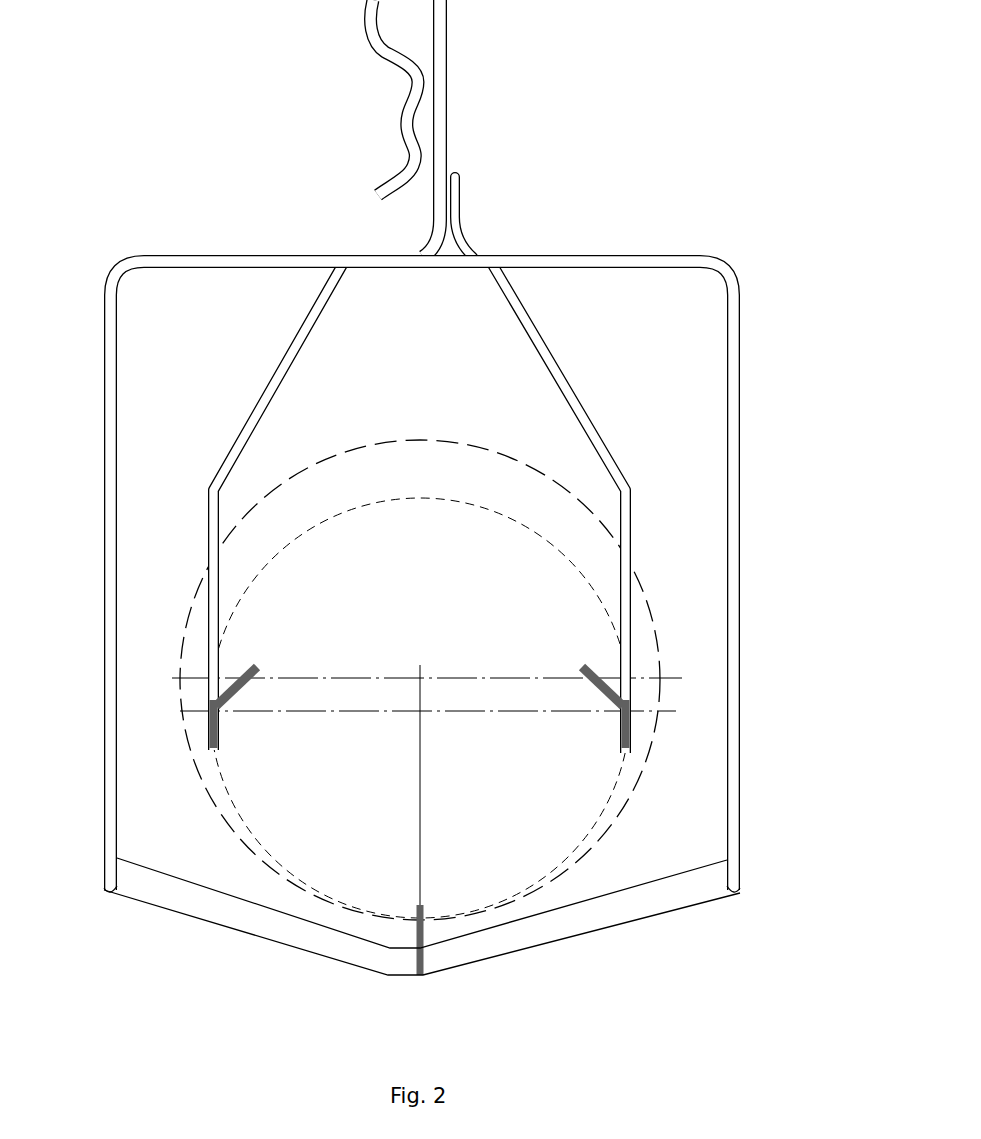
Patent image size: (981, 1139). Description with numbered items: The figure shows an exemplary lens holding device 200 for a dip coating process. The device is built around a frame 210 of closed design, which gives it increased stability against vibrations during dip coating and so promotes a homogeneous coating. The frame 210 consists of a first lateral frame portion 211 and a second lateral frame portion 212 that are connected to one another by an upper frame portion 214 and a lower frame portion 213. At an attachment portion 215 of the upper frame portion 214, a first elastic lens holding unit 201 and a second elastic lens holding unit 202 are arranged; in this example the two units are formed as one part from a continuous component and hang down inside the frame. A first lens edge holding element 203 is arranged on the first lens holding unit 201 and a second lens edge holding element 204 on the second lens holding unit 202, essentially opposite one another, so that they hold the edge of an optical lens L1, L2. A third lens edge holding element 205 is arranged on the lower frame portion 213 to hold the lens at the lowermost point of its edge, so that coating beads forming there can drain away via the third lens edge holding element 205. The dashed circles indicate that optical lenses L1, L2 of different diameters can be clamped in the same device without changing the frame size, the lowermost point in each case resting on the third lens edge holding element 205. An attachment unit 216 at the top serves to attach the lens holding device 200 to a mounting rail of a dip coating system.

The lens holding device 200 is at (694, 86).
The frame 210 is at (419, 567).
The first lateral frame portion 211 is at (104, 476).
The second lateral frame portion 212 is at (733, 458).
The lower frame portion 213 is at (600, 921).
The upper frame portion 214 is at (539, 255).
The attachment portion 215 is at (442, 256).
The attachment unit 216 is at (458, 128).
The first elastic lens holding unit 201 is at (256, 390).
The second elastic lens holding unit 202 is at (584, 396).
The first lens edge holding element 203 is at (262, 668).
The second lens edge holding element 204 is at (580, 667).
The third lens edge holding element 205 is at (429, 907).
The optical lens L1 is at (409, 496).
The optical lens L2 is at (451, 436).